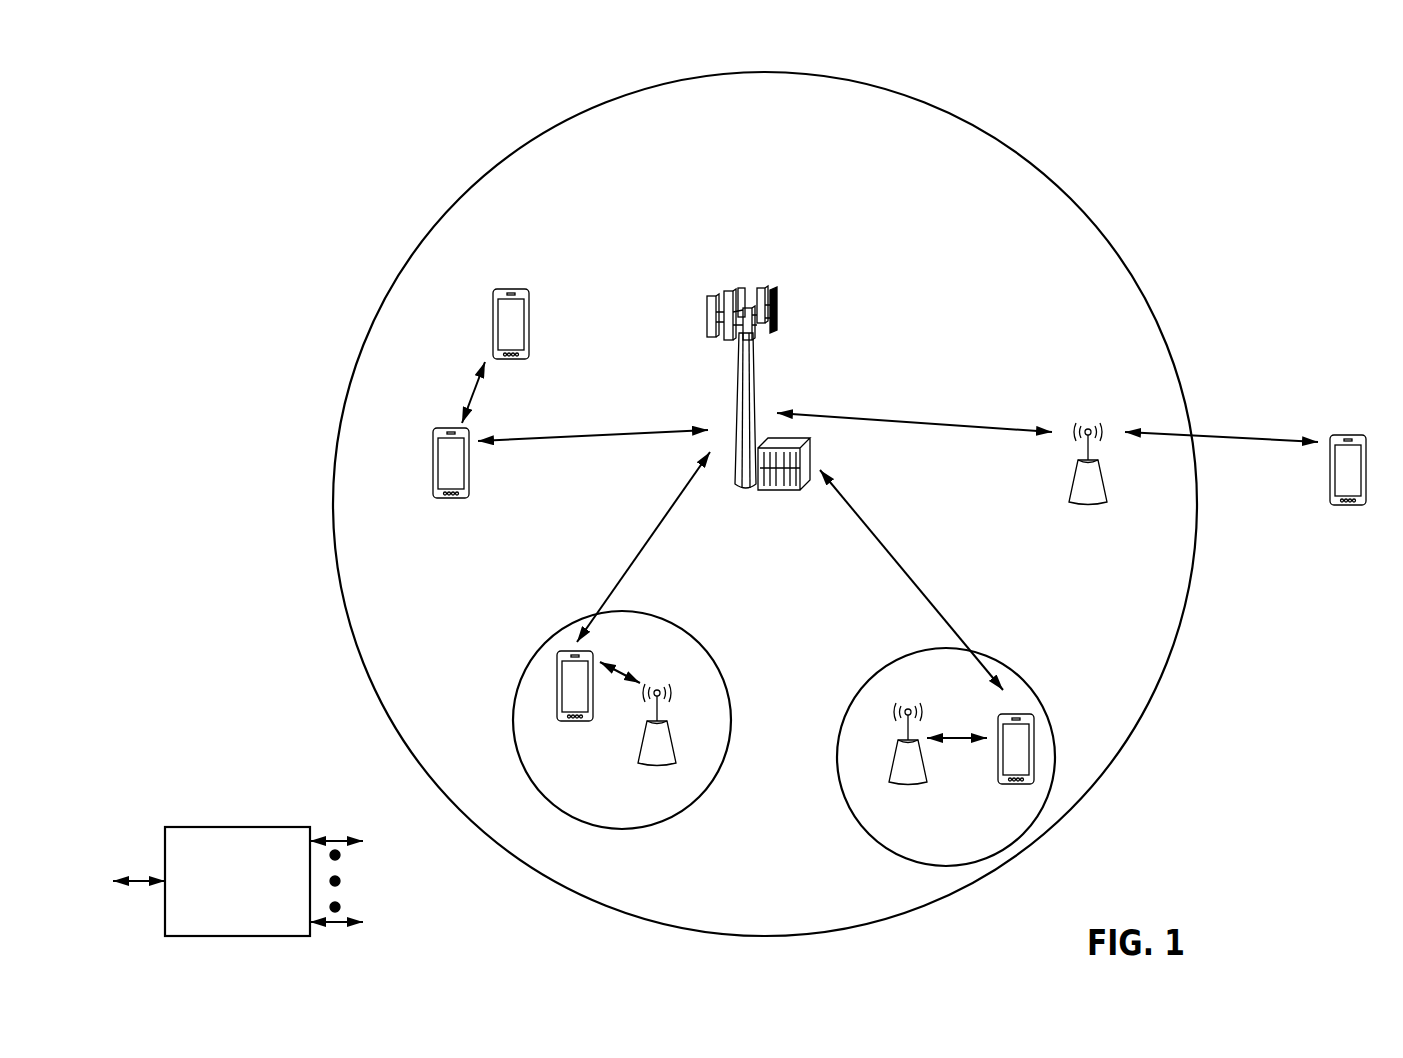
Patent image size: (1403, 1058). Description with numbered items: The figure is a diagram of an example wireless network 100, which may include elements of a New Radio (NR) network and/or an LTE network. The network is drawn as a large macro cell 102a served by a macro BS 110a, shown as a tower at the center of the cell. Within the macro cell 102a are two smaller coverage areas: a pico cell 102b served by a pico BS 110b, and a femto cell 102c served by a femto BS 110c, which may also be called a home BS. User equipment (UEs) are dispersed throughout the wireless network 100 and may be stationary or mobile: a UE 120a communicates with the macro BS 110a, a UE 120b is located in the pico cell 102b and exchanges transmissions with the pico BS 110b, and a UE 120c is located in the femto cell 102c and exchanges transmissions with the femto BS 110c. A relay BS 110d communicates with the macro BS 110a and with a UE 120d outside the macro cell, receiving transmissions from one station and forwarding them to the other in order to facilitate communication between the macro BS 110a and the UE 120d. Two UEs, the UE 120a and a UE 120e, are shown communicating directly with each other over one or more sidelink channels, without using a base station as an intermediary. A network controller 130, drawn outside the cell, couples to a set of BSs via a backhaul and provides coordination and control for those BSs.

The wireless network 100 is at (225, 70).
The macro cell 102a is at (1050, 180).
The pico cell 102b is at (712, 658).
The femto cell 102c is at (880, 666).
The macro BS 110a is at (752, 280).
The pico BS 110b is at (680, 760).
The femto BS 110c is at (898, 772).
The relay BS 110d is at (1090, 424).
The UE 120a is at (432, 462).
The UE 120b is at (562, 722).
The UE 120c is at (1004, 785).
The UE 120d is at (1362, 434).
The UE 120e is at (492, 310).
The network controller 130 is at (236, 826).